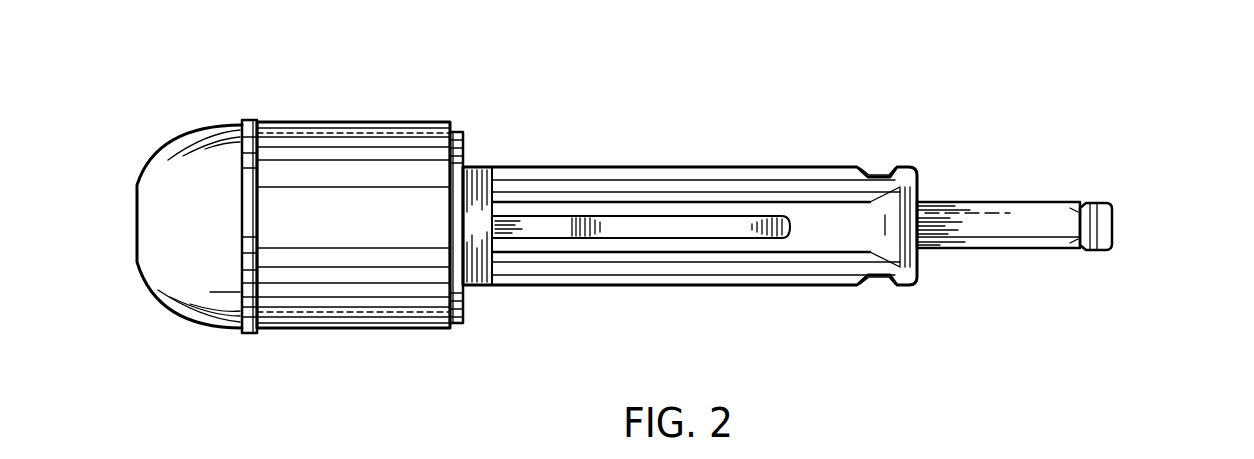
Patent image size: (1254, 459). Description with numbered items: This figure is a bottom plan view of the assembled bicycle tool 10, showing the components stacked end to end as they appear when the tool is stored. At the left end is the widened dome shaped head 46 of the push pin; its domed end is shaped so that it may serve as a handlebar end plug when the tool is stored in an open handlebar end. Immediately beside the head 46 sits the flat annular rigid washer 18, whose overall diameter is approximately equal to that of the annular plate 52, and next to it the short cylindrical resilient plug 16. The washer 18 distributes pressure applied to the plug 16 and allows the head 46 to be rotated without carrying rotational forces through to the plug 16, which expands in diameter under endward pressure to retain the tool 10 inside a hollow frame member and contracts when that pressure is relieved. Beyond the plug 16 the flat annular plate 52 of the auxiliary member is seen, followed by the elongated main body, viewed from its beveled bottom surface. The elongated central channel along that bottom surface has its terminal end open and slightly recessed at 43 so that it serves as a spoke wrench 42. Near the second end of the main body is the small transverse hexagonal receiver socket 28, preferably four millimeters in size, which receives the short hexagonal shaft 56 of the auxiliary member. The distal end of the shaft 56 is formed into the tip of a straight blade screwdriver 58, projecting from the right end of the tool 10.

The bicycle tool 10 is at (777, 155).
The resilient plug 16 is at (352, 330).
The washer 18 is at (254, 335).
The hexagonal receiver socket 28 is at (885, 168).
The spoke wrench 42 is at (652, 227).
The recess 43 is at (530, 227).
The dome shaped head 46 is at (182, 140).
The annular plate 52 is at (465, 142).
The hexagonal shaft 56 is at (1028, 200).
The screwdriver 58 is at (1115, 220).